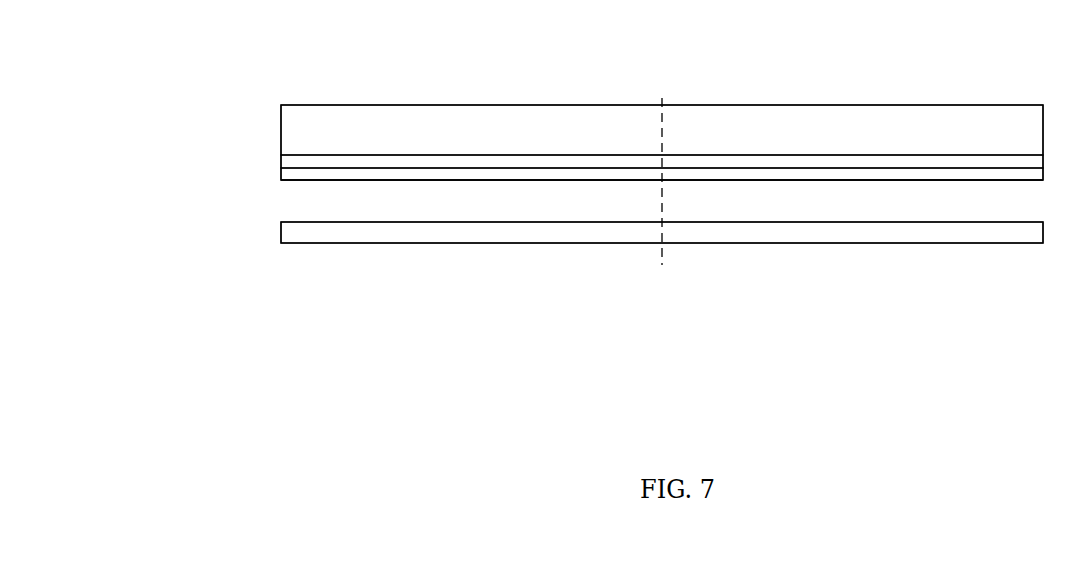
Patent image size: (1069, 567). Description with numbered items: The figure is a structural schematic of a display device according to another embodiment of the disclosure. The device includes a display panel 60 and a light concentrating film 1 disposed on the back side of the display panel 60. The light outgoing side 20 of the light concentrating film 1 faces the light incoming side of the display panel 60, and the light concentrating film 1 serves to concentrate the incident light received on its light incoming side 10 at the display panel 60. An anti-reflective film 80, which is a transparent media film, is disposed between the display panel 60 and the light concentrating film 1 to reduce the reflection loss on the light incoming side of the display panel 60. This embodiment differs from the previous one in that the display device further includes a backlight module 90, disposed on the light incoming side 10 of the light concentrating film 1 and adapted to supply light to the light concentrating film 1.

The light concentrating film 1 is at (212, 183).
The light incoming side 10 is at (752, 232).
The light outgoing side 20 is at (782, 142).
The display panel 60 is at (292, 129).
The anti-reflective film 80 is at (285, 160).
The backlight module 90 is at (292, 232).